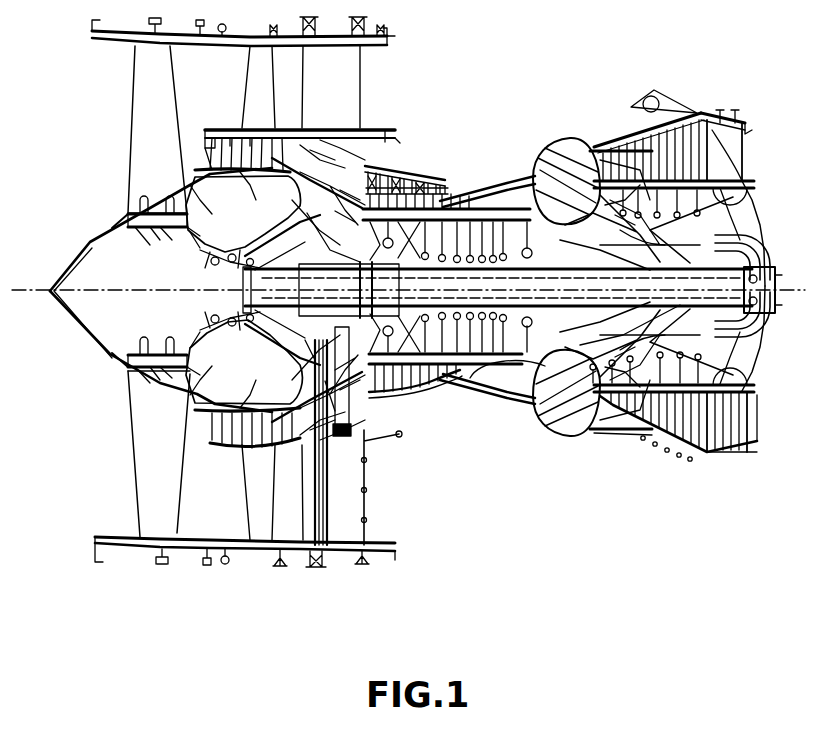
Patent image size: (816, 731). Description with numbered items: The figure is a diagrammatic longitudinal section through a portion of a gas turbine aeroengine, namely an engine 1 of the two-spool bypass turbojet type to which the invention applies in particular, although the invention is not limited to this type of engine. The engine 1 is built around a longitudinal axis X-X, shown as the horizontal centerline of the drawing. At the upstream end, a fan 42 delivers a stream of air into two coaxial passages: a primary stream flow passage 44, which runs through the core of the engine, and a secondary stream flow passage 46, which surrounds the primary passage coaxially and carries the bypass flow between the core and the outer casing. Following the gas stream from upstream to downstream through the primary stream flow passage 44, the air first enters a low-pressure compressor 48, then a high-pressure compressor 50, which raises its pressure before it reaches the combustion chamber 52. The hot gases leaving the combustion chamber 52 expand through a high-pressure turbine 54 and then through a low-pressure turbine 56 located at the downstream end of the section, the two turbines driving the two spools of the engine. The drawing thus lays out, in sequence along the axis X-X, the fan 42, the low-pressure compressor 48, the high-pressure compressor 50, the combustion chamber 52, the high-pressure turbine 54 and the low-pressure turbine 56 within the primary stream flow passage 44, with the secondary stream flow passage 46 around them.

The engine 1 is at (75, 200).
The fan 42 is at (150, 112).
The primary stream flow passage 44 is at (339, 193).
The secondary stream flow passage 46 is at (298, 97).
The low-pressure compressor 48 is at (205, 440).
The high-pressure compressor 50 is at (420, 385).
The combustion chamber 52 is at (555, 410).
The high-pressure turbine 54 is at (600, 430).
The low-pressure turbine 56 is at (708, 457).